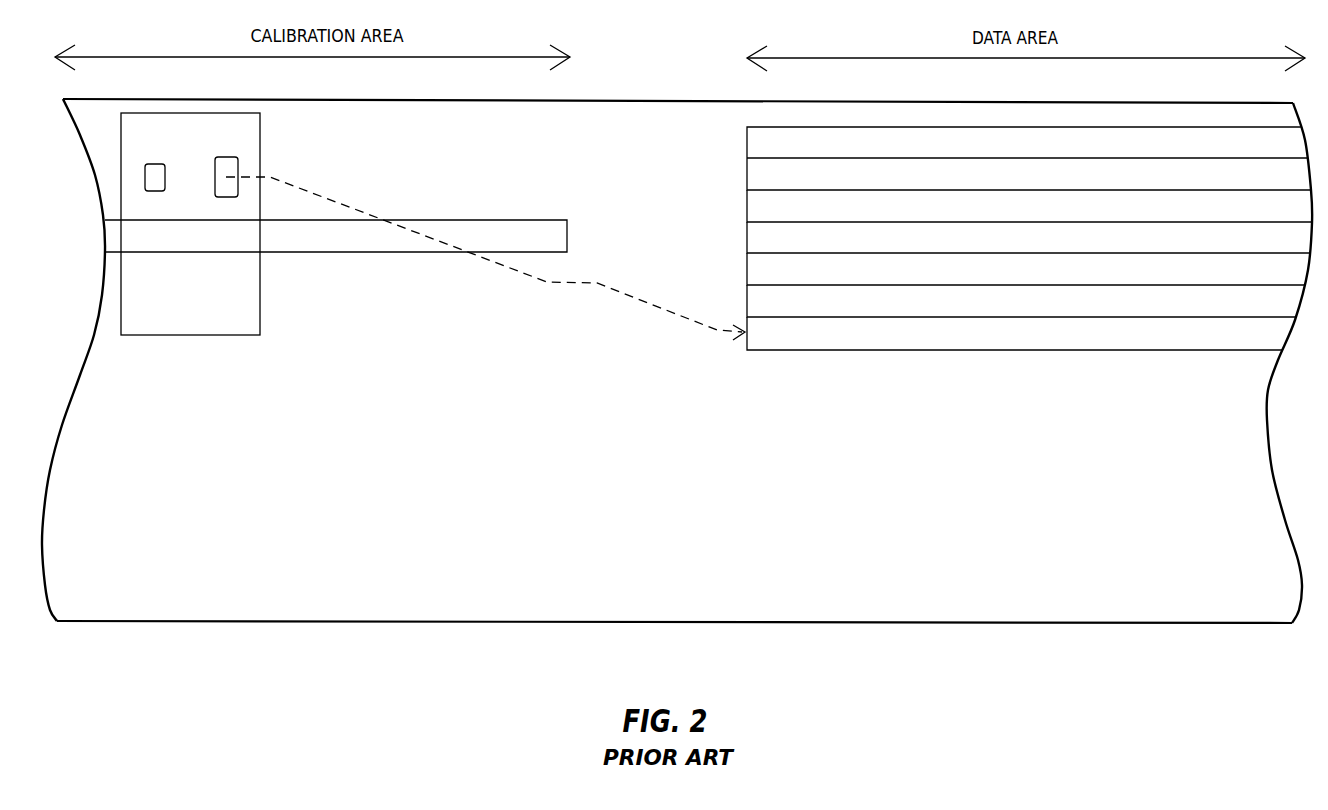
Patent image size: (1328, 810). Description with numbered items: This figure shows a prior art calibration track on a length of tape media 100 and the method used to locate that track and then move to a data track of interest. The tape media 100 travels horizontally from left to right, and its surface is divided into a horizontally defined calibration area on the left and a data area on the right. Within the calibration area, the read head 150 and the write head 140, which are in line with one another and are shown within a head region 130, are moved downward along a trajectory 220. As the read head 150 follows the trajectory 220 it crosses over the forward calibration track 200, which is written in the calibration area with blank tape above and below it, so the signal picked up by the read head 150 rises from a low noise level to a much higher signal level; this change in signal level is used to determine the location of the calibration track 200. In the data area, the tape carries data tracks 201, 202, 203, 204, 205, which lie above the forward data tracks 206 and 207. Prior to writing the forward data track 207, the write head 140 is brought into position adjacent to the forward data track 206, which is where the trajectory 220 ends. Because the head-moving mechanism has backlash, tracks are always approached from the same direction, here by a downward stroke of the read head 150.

The tape media 100 is at (476, 622).
The calibration area region 130 is at (250, 310).
The write head 140 is at (232, 158).
The read head 150 is at (157, 163).
The forward calibration track 200 is at (329, 238).
The data track 201 is at (858, 150).
The data track 202 is at (921, 182).
The data track 203 is at (984, 214).
The data track 204 is at (1048, 246).
The data track 205 is at (1113, 278).
The forward data track 206 is at (932, 309).
The forward data track 207 is at (873, 341).
The trajectory 220 is at (362, 210).